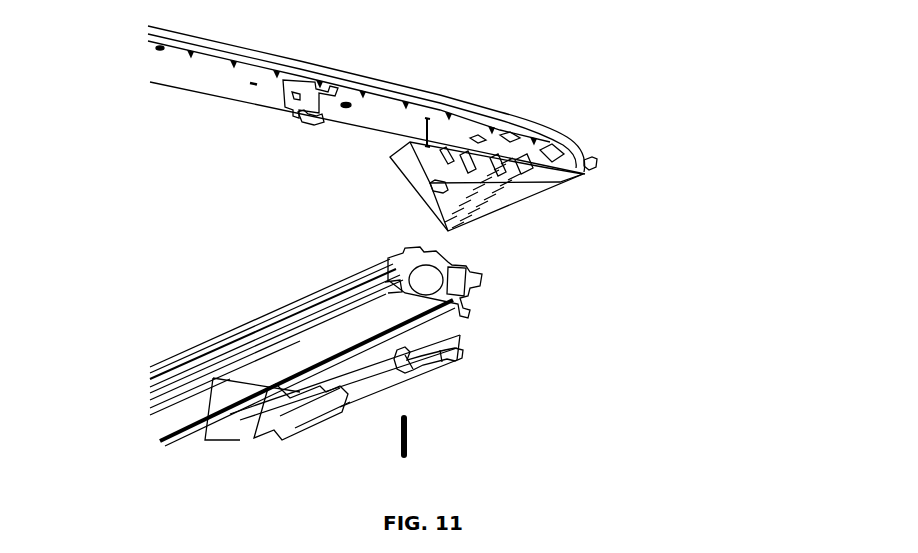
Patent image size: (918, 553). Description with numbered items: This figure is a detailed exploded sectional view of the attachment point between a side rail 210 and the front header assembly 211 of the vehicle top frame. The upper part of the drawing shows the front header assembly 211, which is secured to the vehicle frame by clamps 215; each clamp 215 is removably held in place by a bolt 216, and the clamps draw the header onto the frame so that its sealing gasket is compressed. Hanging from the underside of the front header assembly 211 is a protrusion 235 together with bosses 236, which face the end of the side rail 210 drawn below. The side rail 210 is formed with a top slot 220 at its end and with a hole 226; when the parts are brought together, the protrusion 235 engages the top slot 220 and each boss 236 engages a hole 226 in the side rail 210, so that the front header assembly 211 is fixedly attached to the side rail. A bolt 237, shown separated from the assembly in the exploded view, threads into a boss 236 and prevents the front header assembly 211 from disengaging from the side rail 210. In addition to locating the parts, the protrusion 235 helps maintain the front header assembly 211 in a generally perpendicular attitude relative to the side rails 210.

The side rail 210 is at (146, 428).
The front header assembly 211 is at (208, 67).
The clamp 215 is at (276, 112).
The bolt 216 is at (304, 119).
The top slot 220 is at (461, 261).
The hole 226 is at (400, 365).
The protrusion 235 is at (470, 140).
The boss 236 is at (446, 186).
The bolt 237 is at (411, 436).